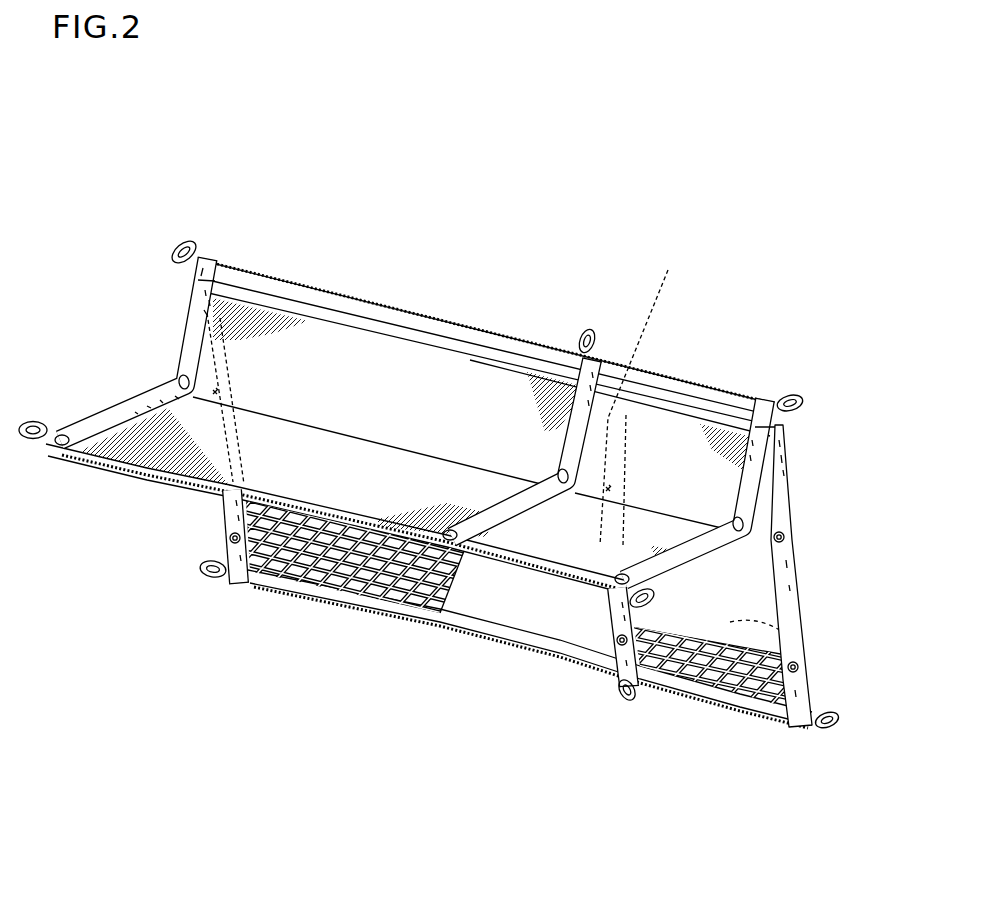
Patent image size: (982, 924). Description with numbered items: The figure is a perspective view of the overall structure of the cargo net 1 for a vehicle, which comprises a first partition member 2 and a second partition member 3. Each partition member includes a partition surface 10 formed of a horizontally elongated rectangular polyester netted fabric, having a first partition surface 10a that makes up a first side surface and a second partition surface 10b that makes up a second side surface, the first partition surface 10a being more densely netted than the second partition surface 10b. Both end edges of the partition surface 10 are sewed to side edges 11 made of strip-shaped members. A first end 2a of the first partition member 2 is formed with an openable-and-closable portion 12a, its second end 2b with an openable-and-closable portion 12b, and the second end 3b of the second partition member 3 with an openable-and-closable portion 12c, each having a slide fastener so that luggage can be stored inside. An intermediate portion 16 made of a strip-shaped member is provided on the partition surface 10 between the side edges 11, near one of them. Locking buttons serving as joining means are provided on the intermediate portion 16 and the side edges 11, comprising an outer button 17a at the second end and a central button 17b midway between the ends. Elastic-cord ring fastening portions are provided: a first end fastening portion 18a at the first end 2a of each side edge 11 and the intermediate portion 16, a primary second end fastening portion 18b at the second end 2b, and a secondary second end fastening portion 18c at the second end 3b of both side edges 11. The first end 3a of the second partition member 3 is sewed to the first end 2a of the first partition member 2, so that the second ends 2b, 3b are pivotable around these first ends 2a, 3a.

The cargo net 1 is at (276, 184).
The first partition member 2 is at (738, 721).
The first end of the first partition member 2a is at (336, 291).
The second end of the first partition member 2b is at (360, 610).
The second partition member 3 is at (145, 482).
The first end of the second partition member 3a is at (398, 337).
The second end of the second partition member 3b is at (65, 452).
The partition surface 10 is at (305, 465).
The first partition surface 10a is at (462, 553).
The second partition surface 10b is at (540, 590).
The side edges 11 is at (123, 413).
The openable-and-closable portion 12a is at (281, 278).
The openable-and-closable portion 12b is at (632, 680).
The openable-and-closable portion 12c is at (110, 463).
The intermediate portion 16 is at (580, 423).
The outer button 17a is at (60, 433).
The central button 17b is at (185, 372).
The first end fastening portion 18a is at (185, 243).
The primary second end fastening portion 18b is at (208, 568).
The secondary second end fastening portion 18c is at (33, 418).